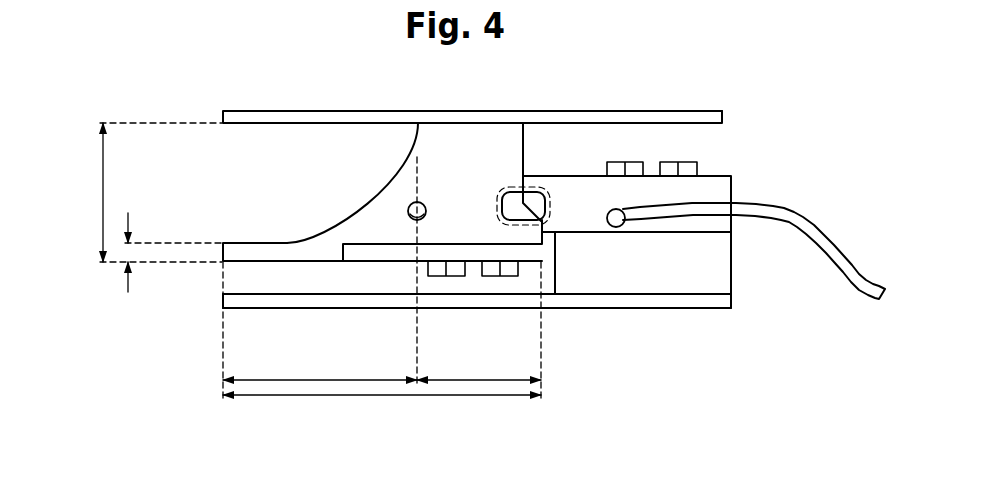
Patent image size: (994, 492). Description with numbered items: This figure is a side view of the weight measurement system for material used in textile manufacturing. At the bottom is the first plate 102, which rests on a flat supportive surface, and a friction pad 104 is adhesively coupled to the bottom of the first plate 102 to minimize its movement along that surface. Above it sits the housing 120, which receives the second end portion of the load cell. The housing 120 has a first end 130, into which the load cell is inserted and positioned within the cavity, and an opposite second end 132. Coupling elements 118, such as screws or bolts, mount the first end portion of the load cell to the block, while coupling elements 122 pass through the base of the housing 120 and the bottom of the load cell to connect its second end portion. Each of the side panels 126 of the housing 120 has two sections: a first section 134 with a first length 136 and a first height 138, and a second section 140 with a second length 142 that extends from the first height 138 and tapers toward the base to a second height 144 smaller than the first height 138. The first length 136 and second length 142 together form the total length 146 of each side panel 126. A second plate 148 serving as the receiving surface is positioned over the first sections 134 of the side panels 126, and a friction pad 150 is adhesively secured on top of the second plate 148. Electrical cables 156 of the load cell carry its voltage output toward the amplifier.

The first plate 102 is at (218, 302).
The friction pad 104 is at (586, 312).
The coupling elements 118 is at (702, 154).
The housing 120 is at (376, 172).
The coupling elements 122 is at (506, 280).
The side panels 126 is at (432, 190).
The first end 130 is at (551, 254).
The second end 132 is at (218, 250).
The first section 134 is at (472, 152).
The first length 136 is at (483, 378).
The first height 138 is at (102, 184).
The second section 140 is at (317, 250).
The second length 142 is at (325, 378).
The second height 144 is at (130, 214).
The total length 146 is at (377, 397).
The second plate 148 is at (220, 104).
The friction pad 150 is at (675, 102).
The electrical cables 156 is at (821, 214).